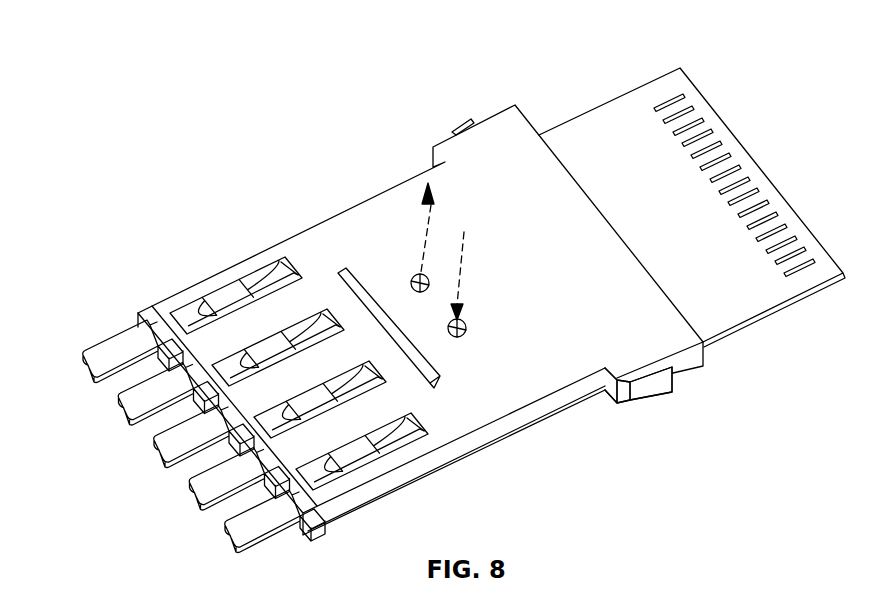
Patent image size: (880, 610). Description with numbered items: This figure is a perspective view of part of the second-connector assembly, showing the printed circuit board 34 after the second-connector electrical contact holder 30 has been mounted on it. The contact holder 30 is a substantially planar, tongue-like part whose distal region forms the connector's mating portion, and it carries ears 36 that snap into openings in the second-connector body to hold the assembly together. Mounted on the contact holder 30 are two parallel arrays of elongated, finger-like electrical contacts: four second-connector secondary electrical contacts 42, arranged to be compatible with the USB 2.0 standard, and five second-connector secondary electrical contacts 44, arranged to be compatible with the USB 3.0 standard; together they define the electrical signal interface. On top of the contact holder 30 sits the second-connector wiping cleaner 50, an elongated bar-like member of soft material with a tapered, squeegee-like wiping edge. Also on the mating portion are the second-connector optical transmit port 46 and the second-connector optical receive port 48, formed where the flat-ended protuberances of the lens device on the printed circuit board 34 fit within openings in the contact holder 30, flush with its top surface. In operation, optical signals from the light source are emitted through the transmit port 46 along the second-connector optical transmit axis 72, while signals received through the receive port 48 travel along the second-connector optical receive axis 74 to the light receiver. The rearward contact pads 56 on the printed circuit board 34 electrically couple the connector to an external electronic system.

The second-connector electrical contact holder 30 is at (405, 180).
The printed circuit board 34 is at (607, 102).
The ears 36 is at (460, 127).
The second-connector secondary electrical contacts 42 is at (208, 297).
The second-connector secondary electrical contacts 44 is at (96, 355).
The second-connector optical transmit port 46 is at (414, 278).
The second-connector optical receive port 48 is at (468, 325).
The second-connector wiping cleaner 50 is at (350, 273).
The rearward contact pads 56 is at (677, 95).
The second-connector optical transmit axis 72 is at (426, 213).
The second-connector optical receive axis 74 is at (462, 268).